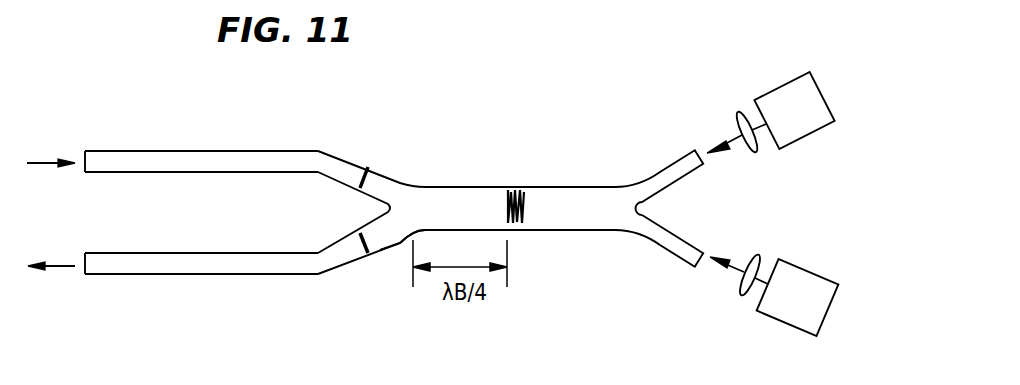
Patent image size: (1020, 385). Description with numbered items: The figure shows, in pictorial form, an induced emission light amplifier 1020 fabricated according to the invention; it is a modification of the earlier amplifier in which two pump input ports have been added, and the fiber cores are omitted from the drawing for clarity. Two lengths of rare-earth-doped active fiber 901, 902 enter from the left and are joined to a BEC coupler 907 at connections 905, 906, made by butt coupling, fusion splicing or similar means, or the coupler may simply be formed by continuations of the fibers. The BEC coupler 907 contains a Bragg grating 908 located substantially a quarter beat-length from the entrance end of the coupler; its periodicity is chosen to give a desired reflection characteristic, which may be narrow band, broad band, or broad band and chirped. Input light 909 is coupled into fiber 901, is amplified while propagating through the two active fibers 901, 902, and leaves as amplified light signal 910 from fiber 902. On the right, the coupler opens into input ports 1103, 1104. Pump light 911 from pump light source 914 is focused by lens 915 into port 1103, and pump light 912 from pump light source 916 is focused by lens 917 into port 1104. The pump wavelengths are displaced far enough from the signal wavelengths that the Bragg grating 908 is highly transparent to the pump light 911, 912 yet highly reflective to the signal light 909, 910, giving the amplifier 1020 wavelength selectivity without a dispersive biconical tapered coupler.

The fiber 901 is at (232, 150).
The fiber 902 is at (232, 253).
The connection 905 is at (354, 165).
The connection 906 is at (358, 247).
The BEC coupler 907 is at (410, 237).
The Bragg grating 908 is at (515, 187).
The light 909 is at (51, 148).
The amplified light signal 910 is at (51, 252).
The pump light 911 is at (728, 140).
The pump light 912 is at (732, 270).
The pump light source 914 is at (787, 80).
The focusing lens 915 is at (757, 152).
The pump light source 916 is at (812, 263).
The focusing lens 917 is at (760, 257).
The amplifier 1020 is at (540, 71).
The input port 1103 is at (652, 168).
The input port 1104 is at (657, 248).